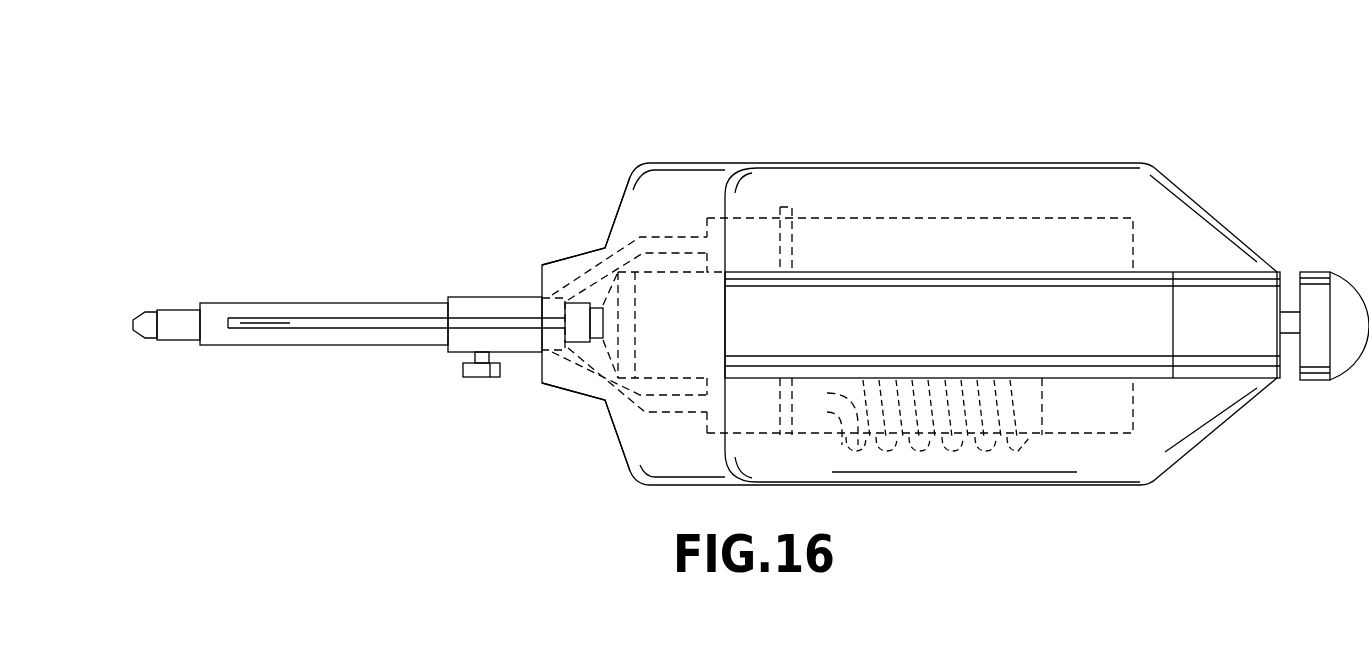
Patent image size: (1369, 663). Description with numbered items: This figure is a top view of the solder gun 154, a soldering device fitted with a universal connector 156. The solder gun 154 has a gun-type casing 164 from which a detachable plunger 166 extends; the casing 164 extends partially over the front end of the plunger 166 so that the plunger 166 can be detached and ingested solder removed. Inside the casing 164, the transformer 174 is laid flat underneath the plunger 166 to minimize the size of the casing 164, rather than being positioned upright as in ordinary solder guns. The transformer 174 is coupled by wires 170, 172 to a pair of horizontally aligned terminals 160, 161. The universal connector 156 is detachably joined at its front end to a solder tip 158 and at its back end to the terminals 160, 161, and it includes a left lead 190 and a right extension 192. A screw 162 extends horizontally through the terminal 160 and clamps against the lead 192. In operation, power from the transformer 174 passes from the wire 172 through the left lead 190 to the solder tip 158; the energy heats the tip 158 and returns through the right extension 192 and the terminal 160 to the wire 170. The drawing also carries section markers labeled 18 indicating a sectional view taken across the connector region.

The section line for FIG. 18 is at (108, 325).
The solder gun 154 is at (954, 123).
The universal connector 156 is at (299, 258).
The solder tip 158 is at (172, 305).
The terminal 160 is at (520, 355).
The terminal 161 is at (493, 297).
The screw 162 is at (462, 368).
The casing 164 is at (700, 168).
The plunger 166 is at (1043, 343).
The wire 170 is at (652, 412).
The wire 172 is at (642, 232).
The transformer 174 is at (1030, 437).
The left lead 190 is at (383, 300).
The right extension 192 is at (338, 350).